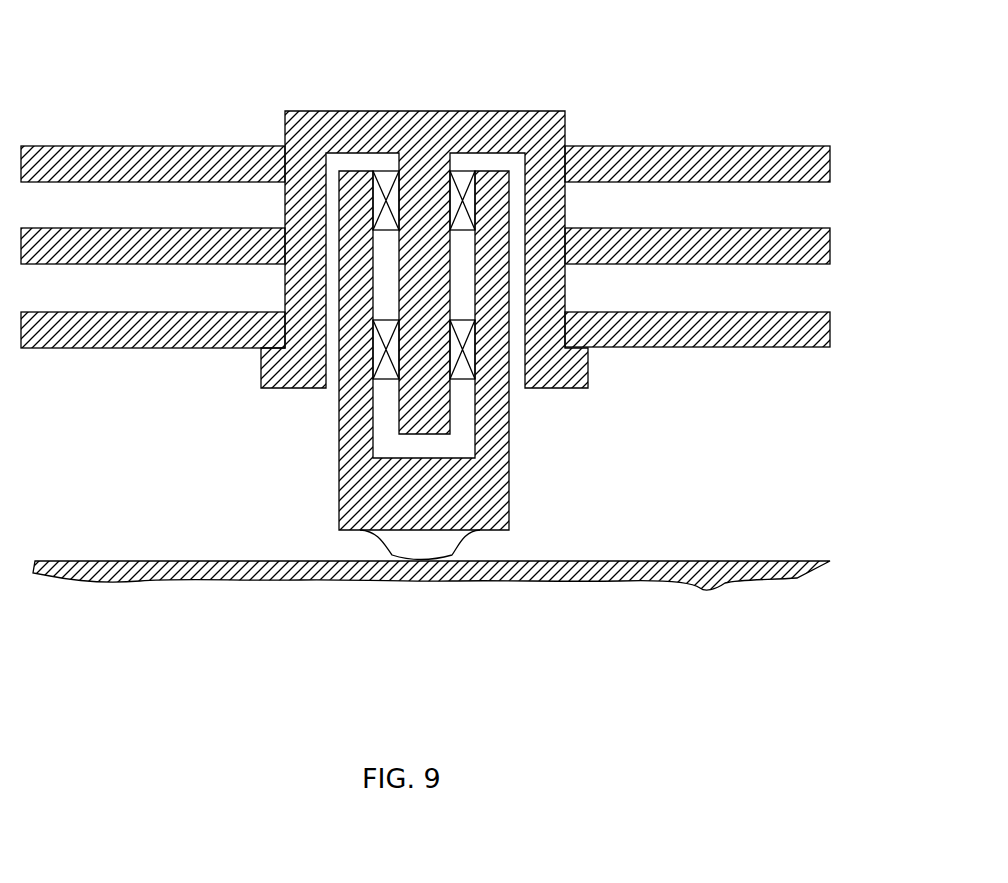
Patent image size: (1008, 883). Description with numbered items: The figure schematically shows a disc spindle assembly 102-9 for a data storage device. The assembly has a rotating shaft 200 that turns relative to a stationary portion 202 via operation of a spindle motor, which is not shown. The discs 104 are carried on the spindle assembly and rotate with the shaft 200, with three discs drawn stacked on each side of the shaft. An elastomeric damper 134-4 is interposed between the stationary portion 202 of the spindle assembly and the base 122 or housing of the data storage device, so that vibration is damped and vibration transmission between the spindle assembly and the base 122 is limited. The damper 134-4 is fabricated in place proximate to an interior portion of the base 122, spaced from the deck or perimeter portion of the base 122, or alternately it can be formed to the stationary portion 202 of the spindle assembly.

The spindle assembly 102-9 is at (662, 108).
The rotating shaft 200 is at (427, 148).
The stationary portion 202 is at (483, 500).
The discs 104 is at (840, 320).
The base 122 is at (670, 560).
The elastomeric damper 134-4 is at (458, 546).